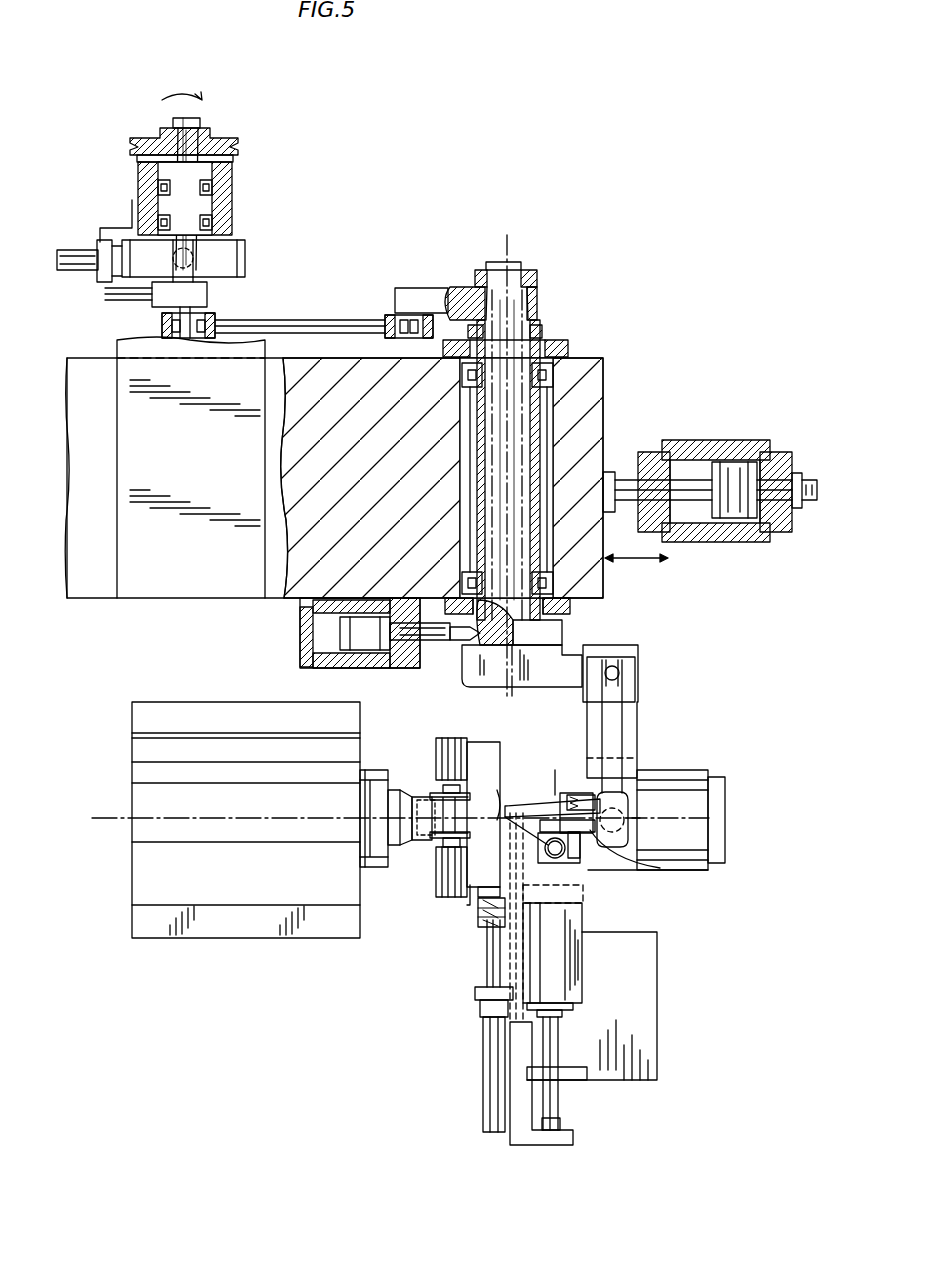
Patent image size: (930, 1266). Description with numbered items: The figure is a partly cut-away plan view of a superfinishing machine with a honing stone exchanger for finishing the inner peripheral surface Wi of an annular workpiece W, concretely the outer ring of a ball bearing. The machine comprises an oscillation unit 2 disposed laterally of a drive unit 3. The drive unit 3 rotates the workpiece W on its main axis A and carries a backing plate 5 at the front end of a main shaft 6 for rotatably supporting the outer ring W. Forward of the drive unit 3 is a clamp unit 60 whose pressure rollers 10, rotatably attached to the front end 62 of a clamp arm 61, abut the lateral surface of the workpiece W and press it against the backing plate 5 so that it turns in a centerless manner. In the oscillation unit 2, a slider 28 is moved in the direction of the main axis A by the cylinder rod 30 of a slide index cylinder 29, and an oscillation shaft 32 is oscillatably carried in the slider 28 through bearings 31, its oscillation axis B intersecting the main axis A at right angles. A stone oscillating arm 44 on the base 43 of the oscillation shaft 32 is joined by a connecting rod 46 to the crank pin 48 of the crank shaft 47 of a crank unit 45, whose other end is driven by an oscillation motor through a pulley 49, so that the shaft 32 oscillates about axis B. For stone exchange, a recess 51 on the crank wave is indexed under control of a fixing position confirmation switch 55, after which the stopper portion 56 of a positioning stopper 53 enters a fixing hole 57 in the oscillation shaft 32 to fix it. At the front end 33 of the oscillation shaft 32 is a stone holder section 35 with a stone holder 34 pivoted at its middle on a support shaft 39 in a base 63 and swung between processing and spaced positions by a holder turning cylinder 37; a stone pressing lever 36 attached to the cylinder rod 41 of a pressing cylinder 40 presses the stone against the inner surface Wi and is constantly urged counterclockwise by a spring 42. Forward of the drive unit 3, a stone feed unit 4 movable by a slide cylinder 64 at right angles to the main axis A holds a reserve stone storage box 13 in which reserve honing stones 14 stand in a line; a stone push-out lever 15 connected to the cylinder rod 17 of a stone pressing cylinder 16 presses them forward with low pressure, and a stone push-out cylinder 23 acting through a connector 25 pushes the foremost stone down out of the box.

The oscillation unit 2 is at (562, 360).
The drive unit 3 is at (248, 947).
The stone feed unit 4 is at (472, 1021).
The backing plate 5 is at (398, 795).
The main shaft 6 is at (375, 770).
The pressure rollers 10 is at (443, 830).
The reserve stone storage box 13 is at (557, 908).
The reserve honing stones 14 is at (497, 912).
The stone push-out lever 15 is at (518, 1135).
The stone pressing cylinder 16 is at (570, 977).
The cylinder rod 17 is at (552, 1043).
The stone push-out cylinder 23 is at (588, 838).
The connector 25 is at (566, 853).
The slider 28 is at (600, 383).
The slide index cylinder 29 is at (685, 442).
The cylinder rod 30 is at (698, 483).
The bearings 31 is at (550, 377).
The oscillation shaft 32 is at (522, 350).
The front end 33 is at (563, 632).
The stone holder 34 is at (647, 868).
The stone holder section 35 is at (640, 690).
The stone pressing lever 36 is at (513, 807).
The holder turning cylinder 37 is at (618, 672).
The support shaft 39 is at (612, 758).
The pressing cylinder 40 is at (612, 793).
The cylinder rod 41 is at (660, 795).
The spring 42 is at (568, 793).
The base 43 is at (470, 305).
The stone oscillating arm 44 is at (408, 288).
The crank unit 45 is at (232, 205).
The connecting rod 46 is at (300, 325).
The crank shaft 47 is at (195, 195).
The crank pin 48 is at (170, 318).
The pulley 49 is at (150, 130).
The recess 51 is at (200, 250).
The positioning stopper 53 is at (320, 665).
The fixing position confirmation switch 55 is at (78, 252).
The stopper portion 56 is at (430, 640).
The fixing hole 57 is at (458, 640).
The clamp unit 60 is at (448, 897).
The clamp arm 61 is at (485, 745).
The front end 62 is at (452, 712).
The base 63 is at (545, 660).
The slide cylinder 64 is at (492, 1090).
The main axis A is at (105, 818).
The oscillation axis B is at (509, 245).
The workpiece W is at (423, 840).
The inner peripheral surface Wi is at (408, 843).